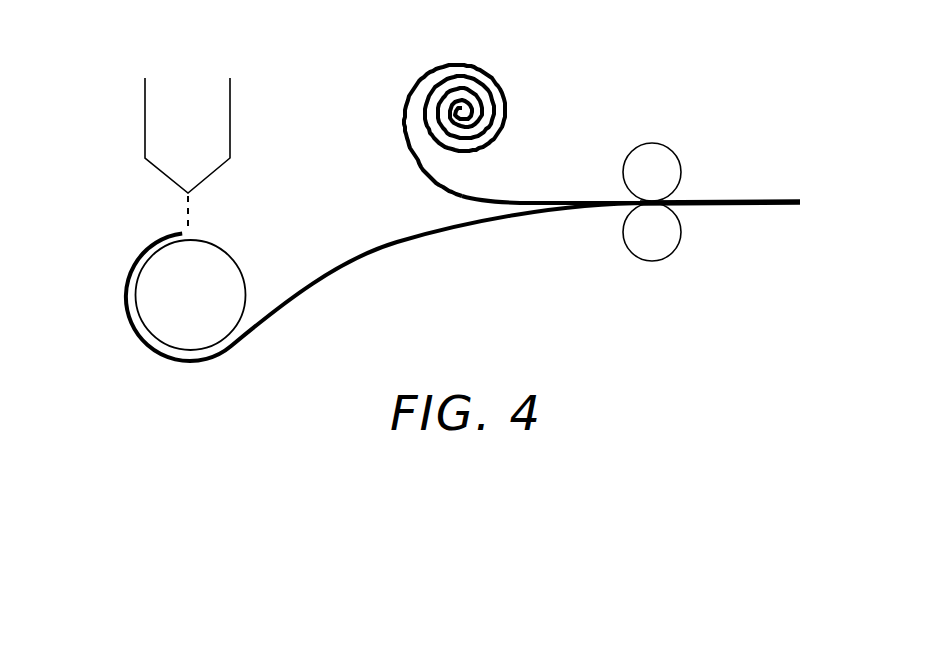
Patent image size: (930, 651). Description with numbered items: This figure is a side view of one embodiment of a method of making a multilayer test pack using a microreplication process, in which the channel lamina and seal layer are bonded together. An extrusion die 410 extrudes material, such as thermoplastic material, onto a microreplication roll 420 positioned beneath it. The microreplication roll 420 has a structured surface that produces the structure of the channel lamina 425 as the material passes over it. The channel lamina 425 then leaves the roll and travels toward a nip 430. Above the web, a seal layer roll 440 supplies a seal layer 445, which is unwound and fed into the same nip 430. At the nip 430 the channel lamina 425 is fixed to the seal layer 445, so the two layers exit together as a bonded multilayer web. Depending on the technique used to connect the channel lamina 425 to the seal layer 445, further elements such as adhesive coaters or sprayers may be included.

The extrusion die 410 is at (117, 122).
The microreplication roll 420 is at (210, 309).
The channel lamina 425 is at (397, 273).
The nip 430 is at (678, 195).
The seal layer roll 440 is at (500, 73).
The seal layer 445 is at (507, 187).